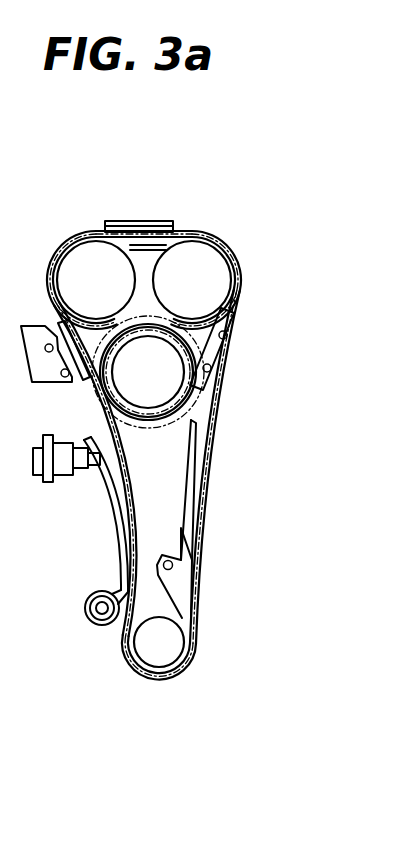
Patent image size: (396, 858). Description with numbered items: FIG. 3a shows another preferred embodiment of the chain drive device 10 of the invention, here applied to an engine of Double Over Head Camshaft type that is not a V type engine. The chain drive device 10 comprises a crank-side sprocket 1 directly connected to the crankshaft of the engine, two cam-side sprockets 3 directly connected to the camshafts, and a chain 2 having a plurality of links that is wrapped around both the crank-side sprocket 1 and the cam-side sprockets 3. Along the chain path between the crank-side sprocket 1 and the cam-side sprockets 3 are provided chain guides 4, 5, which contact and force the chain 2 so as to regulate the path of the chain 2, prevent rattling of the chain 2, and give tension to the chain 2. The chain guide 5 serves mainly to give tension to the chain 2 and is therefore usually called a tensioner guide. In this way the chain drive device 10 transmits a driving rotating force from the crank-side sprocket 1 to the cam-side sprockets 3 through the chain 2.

The crank-side sprocket 1 is at (163, 657).
The chain 2 is at (237, 254).
The cam-side sprocket 3 is at (75, 262).
The chain guide 4 is at (143, 220).
The chain guide (tensioner guide) 5 is at (33, 380).
The chain drive device 10 is at (107, 705).